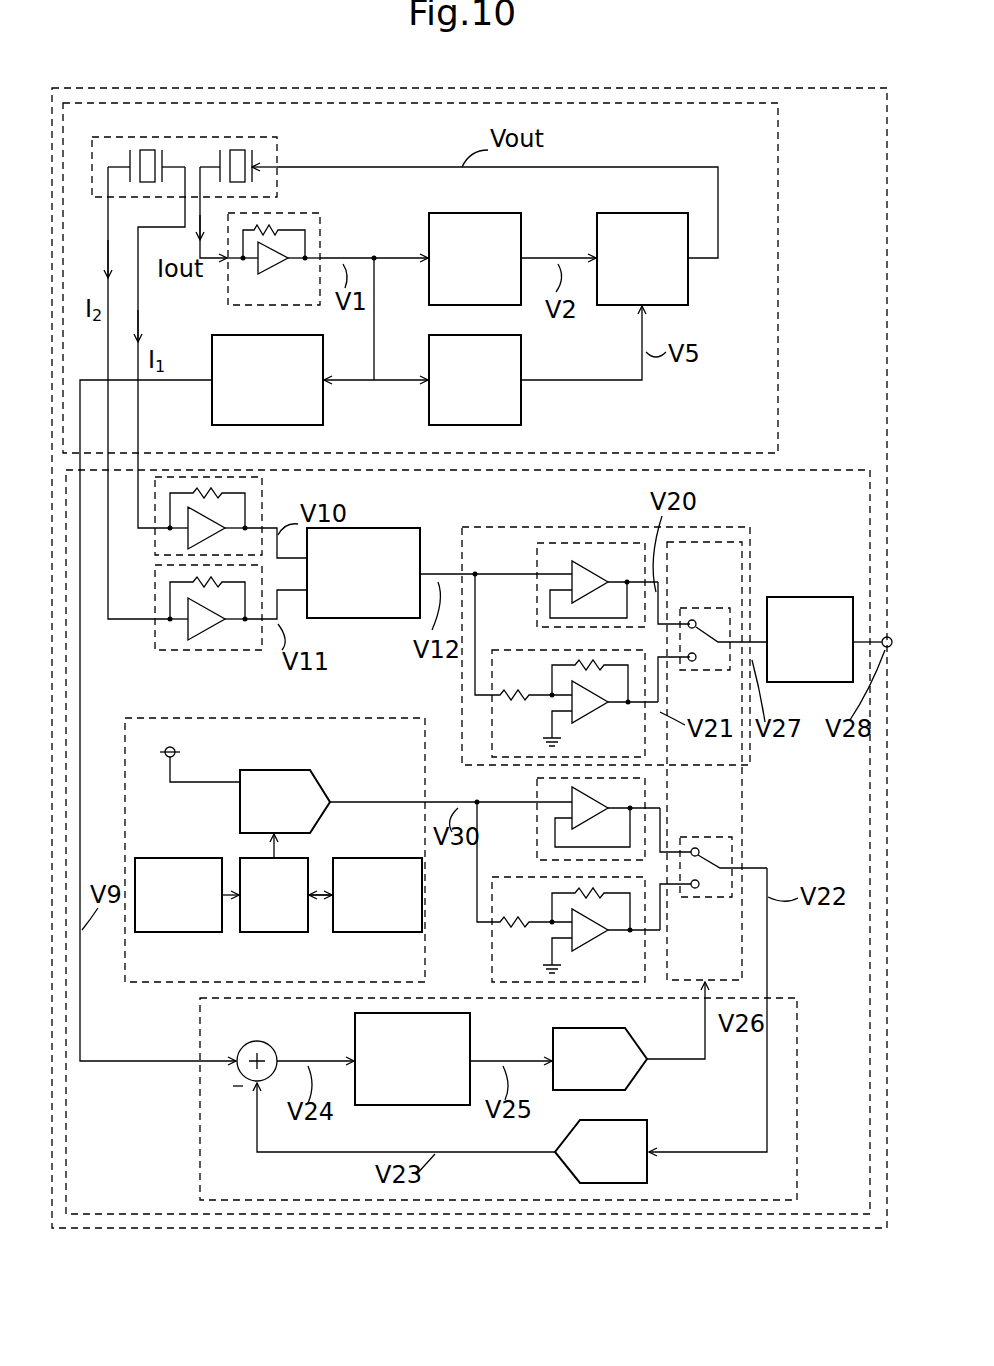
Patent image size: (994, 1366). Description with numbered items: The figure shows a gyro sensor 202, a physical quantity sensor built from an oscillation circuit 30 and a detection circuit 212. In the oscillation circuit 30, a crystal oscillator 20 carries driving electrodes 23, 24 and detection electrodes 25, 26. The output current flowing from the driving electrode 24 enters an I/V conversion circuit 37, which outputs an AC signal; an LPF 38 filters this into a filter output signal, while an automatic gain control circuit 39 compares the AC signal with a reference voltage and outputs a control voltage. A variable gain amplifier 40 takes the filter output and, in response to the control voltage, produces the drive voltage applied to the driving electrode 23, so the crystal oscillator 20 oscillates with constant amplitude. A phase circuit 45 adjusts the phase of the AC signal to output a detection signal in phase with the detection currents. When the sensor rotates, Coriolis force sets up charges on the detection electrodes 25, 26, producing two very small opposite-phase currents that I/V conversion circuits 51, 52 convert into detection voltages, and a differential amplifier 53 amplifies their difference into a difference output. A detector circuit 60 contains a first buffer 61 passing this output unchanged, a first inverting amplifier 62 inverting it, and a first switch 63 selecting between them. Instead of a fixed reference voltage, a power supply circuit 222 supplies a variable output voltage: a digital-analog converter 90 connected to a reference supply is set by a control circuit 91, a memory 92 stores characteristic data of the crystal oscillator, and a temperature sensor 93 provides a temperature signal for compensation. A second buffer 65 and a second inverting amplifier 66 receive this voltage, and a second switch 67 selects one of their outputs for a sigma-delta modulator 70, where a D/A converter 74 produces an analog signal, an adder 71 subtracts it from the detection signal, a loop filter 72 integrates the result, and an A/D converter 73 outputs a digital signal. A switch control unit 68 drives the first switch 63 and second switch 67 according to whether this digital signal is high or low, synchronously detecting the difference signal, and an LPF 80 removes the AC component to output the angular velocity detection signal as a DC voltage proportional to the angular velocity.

The gyro sensor 202 is at (738, 88).
The oscillation circuit 30 is at (779, 163).
The detection circuit 212 is at (815, 470).
The crystal oscillator 20 is at (214, 153).
The driving electrode 23 is at (252, 150).
The driving electrode 24 is at (218, 150).
The detection electrode 25 is at (158, 150).
The detection electrode 26 is at (128, 150).
The I/V conversion circuit 37 is at (320, 228).
The LPF 38 is at (475, 213).
The automatic gain control circuit 39 is at (522, 416).
The variable gain amplifier 40 is at (638, 213).
The phase circuit 45 is at (324, 416).
The I/V conversion circuit 51 is at (263, 498).
The I/V conversion circuit 52 is at (211, 652).
The differential amplifier 53 is at (378, 528).
The detector circuit 60 is at (726, 527).
The first buffer 61 is at (536, 566).
The first inverting amplifier 62 is at (520, 650).
The first switch 63 is at (695, 610).
The LPF 80 is at (815, 597).
The power supply circuit 222 is at (335, 717).
The digital-analog converter 90 is at (318, 790).
The control circuit 91 is at (274, 932).
The memory 92 is at (383, 932).
The temperature sensor 93 is at (178, 858).
The second buffer 65 is at (537, 848).
The second inverting amplifier 66 is at (492, 961).
The second switch 67 is at (702, 837).
The switch control unit 68 is at (744, 812).
The sigma-delta modulator 70 is at (798, 1040).
The adder 71 is at (269, 1047).
The loop filter 72 is at (472, 1032).
The A/D converter 73 is at (640, 1046).
The D/A converter 74 is at (650, 1142).